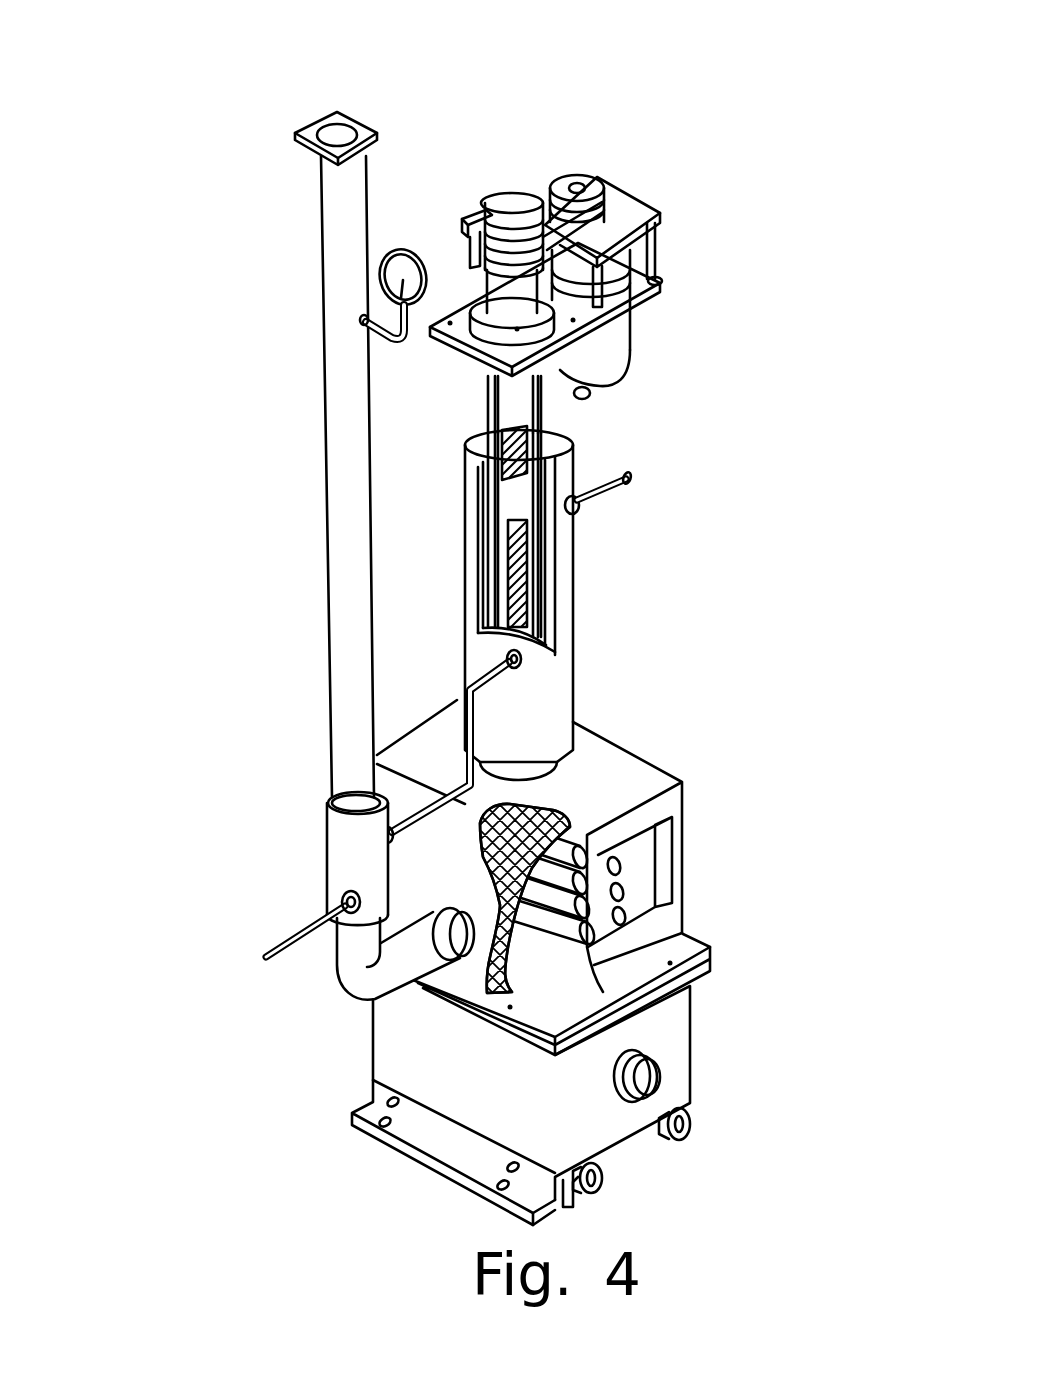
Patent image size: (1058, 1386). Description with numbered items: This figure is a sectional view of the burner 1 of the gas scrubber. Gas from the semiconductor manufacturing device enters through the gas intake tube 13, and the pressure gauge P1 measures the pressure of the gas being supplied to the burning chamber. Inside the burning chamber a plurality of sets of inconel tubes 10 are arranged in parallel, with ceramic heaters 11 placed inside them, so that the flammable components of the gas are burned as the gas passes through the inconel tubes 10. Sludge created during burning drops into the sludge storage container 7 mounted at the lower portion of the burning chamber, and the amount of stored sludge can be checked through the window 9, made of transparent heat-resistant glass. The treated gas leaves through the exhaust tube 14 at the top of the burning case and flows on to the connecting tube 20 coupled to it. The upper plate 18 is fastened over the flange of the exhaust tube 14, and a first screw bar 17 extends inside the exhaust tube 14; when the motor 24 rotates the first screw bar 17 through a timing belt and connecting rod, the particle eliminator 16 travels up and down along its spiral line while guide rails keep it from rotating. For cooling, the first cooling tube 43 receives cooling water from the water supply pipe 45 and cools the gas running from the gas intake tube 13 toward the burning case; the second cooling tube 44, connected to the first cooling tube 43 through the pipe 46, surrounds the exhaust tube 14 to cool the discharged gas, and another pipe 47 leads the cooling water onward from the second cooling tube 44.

The burner 1 is at (552, 112).
The pressure gauge P1 is at (412, 248).
The gas intake tube 13 is at (340, 409).
The exhaust tube 14 is at (483, 405).
The particle eliminator 16 is at (512, 484).
The first screw bar 17 is at (512, 540).
The upper plate 18 is at (642, 288).
The connecting tube 20 is at (590, 393).
The motor 24 is at (628, 337).
The second cooling tube 44 is at (578, 675).
The pipe 46 is at (477, 670).
The other pipe 47 is at (620, 483).
The first cooling tube 43 is at (342, 847).
The water supply pipe 45 is at (296, 925).
The inconel tubes 10 is at (563, 825).
The ceramic heaters 11 is at (634, 866).
The sludge storage container 7 is at (668, 1025).
The window 9 is at (655, 1075).